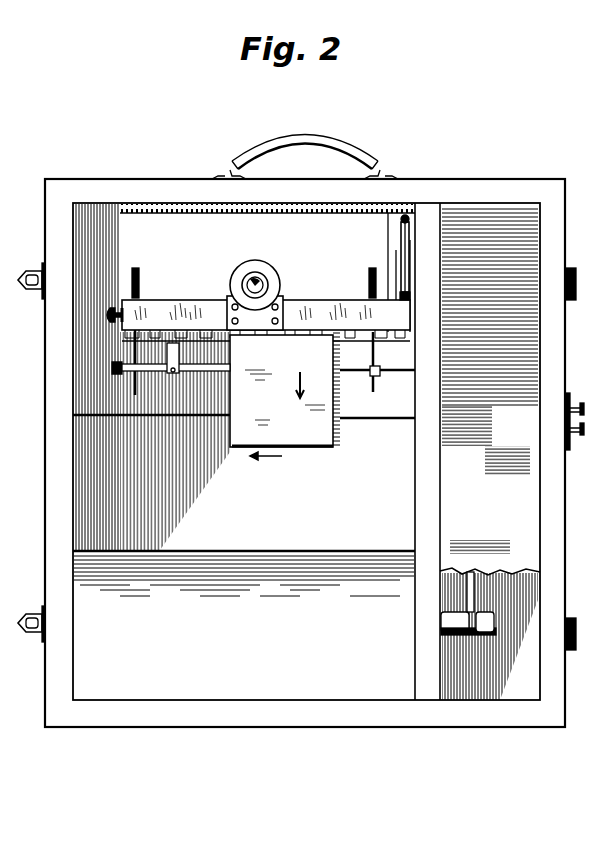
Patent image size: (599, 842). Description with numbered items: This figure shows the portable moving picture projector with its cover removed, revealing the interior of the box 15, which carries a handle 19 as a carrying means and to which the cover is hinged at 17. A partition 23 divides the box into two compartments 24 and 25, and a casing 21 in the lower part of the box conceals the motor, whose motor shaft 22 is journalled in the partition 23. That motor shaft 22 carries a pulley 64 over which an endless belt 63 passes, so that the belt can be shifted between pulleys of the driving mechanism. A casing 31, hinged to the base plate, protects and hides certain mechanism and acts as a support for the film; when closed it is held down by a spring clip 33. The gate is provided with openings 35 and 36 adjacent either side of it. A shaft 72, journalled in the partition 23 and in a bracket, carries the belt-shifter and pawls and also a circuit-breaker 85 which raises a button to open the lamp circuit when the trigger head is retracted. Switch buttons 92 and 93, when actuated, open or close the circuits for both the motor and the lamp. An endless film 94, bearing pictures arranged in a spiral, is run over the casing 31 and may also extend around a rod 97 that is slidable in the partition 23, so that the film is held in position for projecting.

The box 15 is at (136, 190).
The handle 19 is at (345, 152).
The hinge 17 is at (566, 284).
The casing 31 is at (396, 232).
The spring clip 33 is at (410, 248).
The opening 35 is at (136, 268).
The opening 36 is at (373, 268).
The circuit-breaker 85 is at (178, 348).
The shaft 72 is at (410, 372).
The endless film 94 is at (281, 397).
The rod 97 is at (408, 416).
The switch button 92 is at (566, 410).
The switch button 93 is at (566, 447).
The compartment 24 is at (100, 503).
The partition 23 is at (432, 503).
The casing 21 is at (312, 562).
The endless belt 63 is at (482, 578).
The motor shaft 22 is at (440, 634).
The pulley 64 is at (492, 634).
The compartment 25 is at (462, 690).